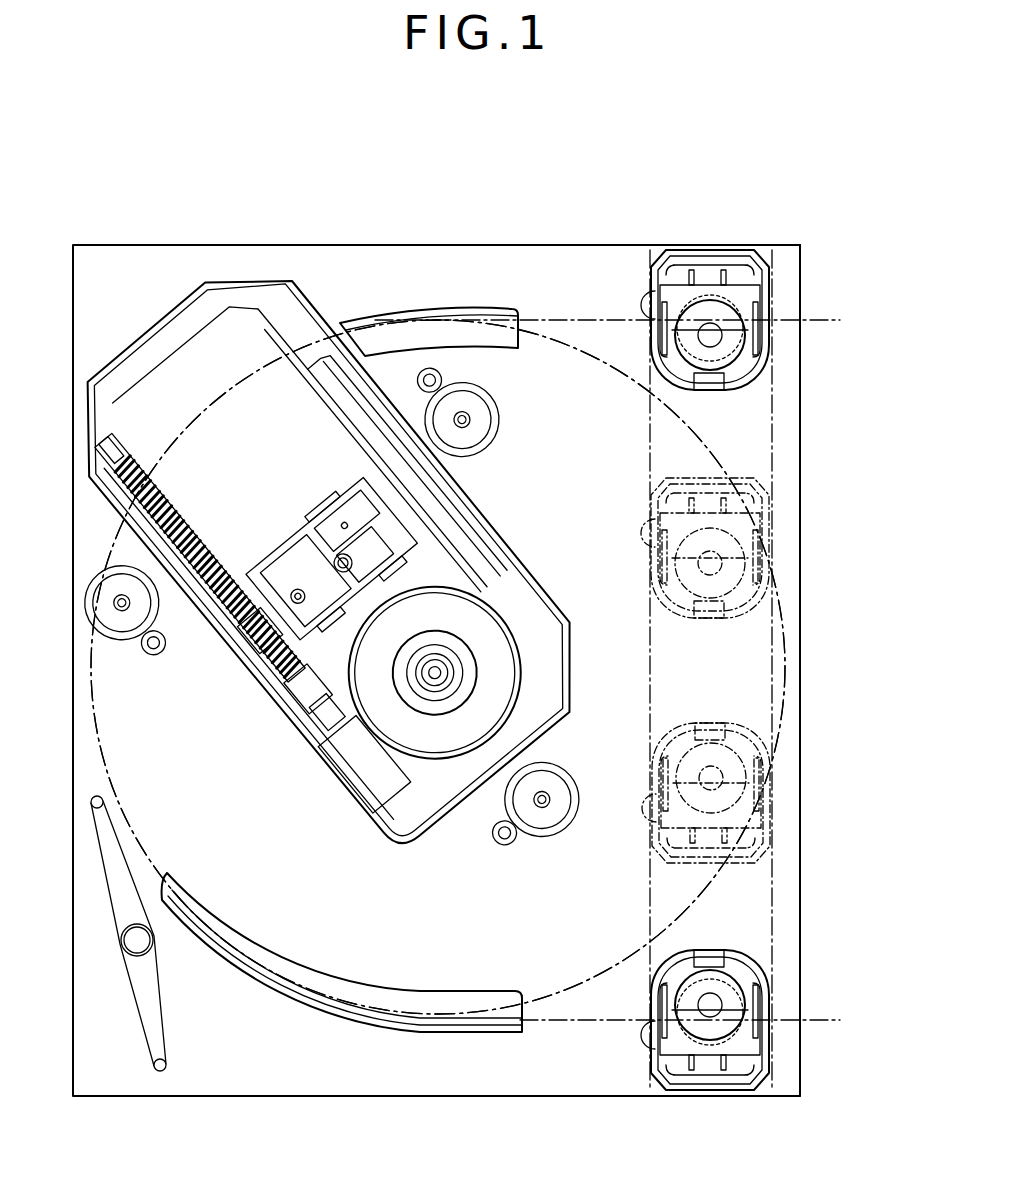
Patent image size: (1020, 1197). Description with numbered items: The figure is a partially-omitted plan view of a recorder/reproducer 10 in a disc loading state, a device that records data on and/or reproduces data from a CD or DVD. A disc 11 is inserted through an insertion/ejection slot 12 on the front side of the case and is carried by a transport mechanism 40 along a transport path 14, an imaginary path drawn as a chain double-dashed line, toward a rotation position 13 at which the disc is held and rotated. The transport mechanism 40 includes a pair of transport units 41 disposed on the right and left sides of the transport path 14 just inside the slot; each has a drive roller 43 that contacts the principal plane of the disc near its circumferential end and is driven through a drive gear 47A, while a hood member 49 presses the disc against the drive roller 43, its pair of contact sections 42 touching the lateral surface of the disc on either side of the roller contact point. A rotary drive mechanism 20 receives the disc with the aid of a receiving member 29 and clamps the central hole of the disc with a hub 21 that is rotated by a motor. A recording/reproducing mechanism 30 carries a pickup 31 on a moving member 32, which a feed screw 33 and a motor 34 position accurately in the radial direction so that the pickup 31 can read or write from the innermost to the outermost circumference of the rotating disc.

The recorder/reproducer 10 is at (147, 245).
The disc 11 is at (548, 1022).
The insertion/ejection slot 12 is at (803, 853).
The rotation position 13 is at (438, 667).
The transport path 14 is at (823, 1022).
The rotary drive mechanism 20 is at (366, 583).
The hub 21 is at (397, 730).
The receiving member 29 is at (458, 308).
The recording/reproducing mechanism 30 is at (282, 602).
The pickup 31 is at (330, 545).
The moving member 32 is at (258, 560).
The feed screw 33 is at (212, 625).
The motor 34 is at (343, 748).
The transport mechanism 40 is at (716, 672).
The transport unit 41 is at (710, 250).
The contact section 42 is at (760, 320).
The drive roller 43 is at (738, 338).
The drive gear 47A is at (646, 292).
The hood member 49 is at (716, 373).